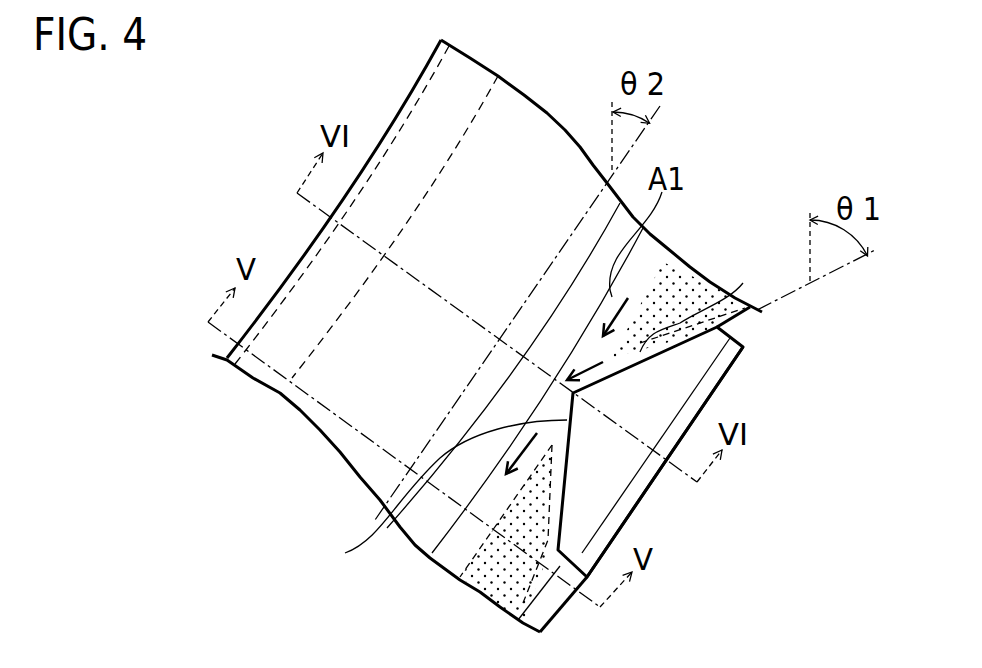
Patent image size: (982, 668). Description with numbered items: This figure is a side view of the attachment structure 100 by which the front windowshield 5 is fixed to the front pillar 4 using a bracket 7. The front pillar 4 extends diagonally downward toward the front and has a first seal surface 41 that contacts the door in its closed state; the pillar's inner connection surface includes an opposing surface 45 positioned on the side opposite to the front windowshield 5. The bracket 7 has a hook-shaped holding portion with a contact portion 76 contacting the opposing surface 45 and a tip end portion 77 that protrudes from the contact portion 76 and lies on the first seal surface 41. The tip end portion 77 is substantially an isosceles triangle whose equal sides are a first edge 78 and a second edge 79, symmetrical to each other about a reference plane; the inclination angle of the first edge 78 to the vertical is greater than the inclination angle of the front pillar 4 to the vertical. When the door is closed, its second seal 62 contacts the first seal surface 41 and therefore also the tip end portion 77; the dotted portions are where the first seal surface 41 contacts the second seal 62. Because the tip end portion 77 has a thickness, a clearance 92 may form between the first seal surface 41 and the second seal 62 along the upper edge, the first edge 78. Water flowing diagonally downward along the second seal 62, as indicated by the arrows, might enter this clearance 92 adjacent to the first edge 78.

The front pillar 4 is at (373, 143).
The front windowshield 5 is at (403, 98).
The attachment structure 100 is at (277, 217).
The second seal 62 is at (610, 362).
The first edge 78 is at (690, 305).
The clearance 92 is at (735, 303).
The opposing surface 45 is at (745, 328).
The contact portion 76 is at (723, 387).
The tip end portion 77 is at (650, 475).
The bracket 7 is at (642, 500).
The second edge 79 is at (437, 496).
The first seal surface 41 is at (455, 557).